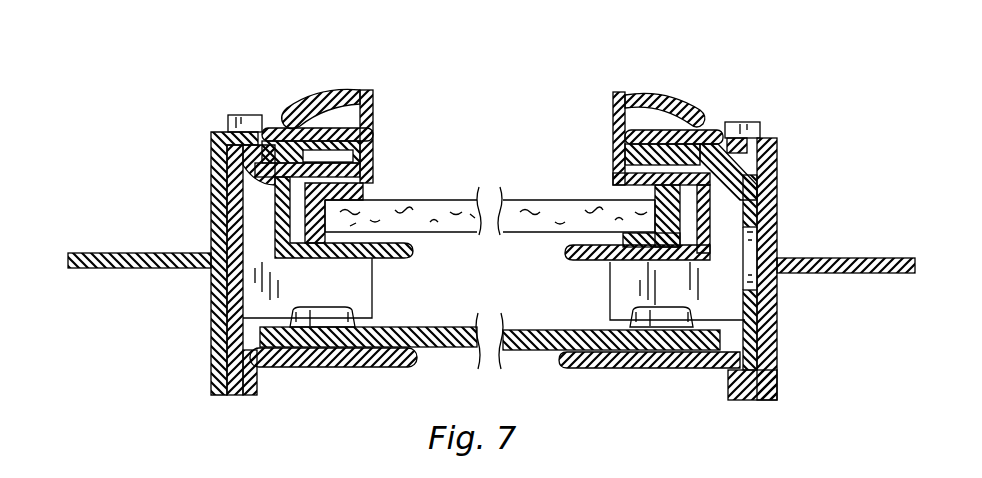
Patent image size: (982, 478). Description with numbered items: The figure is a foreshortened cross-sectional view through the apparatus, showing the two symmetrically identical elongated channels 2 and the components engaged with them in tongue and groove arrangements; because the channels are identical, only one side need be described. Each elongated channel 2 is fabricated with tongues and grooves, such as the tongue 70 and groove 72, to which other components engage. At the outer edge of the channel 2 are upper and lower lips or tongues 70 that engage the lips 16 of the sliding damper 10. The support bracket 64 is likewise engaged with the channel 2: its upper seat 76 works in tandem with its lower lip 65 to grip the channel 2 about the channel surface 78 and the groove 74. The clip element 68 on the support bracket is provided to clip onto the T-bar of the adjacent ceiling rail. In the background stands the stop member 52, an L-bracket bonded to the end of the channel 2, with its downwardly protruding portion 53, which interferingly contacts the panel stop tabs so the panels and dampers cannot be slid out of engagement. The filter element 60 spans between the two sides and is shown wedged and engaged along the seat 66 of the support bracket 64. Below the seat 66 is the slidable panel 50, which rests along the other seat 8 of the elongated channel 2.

The elongated channel 2 is at (216, 314).
The seat 8 is at (336, 370).
The damper 10 is at (770, 142).
The lip 16 is at (730, 385).
The panel 50 is at (560, 374).
The stop member 52 is at (374, 268).
The downwardly protruding portion 53 is at (684, 292).
The filter element 60 is at (560, 200).
The support bracket 64 is at (680, 108).
The lower lip 65 is at (278, 135).
The seat 66 is at (405, 246).
The clip element 68 is at (624, 96).
The tongue 70 is at (763, 156).
The groove 72 is at (766, 197).
The groove 74 is at (328, 103).
The upper seat 76 is at (350, 101).
The channel surface 78 is at (374, 149).